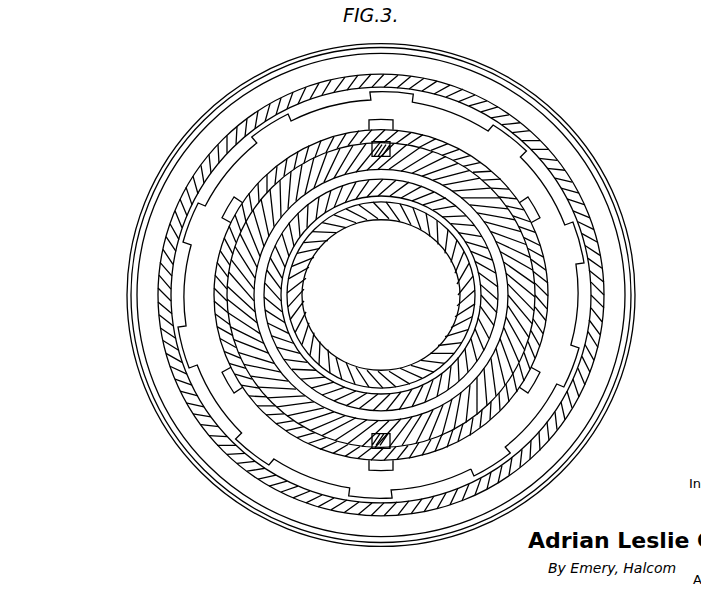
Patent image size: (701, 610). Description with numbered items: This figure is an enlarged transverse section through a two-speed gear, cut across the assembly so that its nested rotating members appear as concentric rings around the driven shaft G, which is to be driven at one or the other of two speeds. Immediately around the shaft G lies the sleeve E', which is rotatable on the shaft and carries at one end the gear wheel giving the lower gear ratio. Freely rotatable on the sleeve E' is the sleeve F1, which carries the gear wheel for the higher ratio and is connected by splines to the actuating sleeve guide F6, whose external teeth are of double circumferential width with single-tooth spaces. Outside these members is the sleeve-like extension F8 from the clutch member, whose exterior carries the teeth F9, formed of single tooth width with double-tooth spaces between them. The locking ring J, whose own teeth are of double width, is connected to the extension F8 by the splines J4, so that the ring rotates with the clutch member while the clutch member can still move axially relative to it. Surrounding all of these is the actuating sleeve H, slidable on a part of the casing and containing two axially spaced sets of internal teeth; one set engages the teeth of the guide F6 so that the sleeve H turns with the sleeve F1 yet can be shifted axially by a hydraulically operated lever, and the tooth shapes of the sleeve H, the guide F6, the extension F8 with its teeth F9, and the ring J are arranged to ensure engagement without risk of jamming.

The actuating sleeve H is at (498, 113).
The teeth on the extension of the clutch member F9 is at (203, 430).
The sleeve-like extension from the clutch member F8 is at (573, 273).
The locking ring J is at (527, 222).
The splines J4 is at (533, 380).
The actuating sleeve guide F6 is at (490, 190).
The sleeve F1 is at (452, 174).
The sleeve E' is at (381, 295).
The shaft G is at (365, 212).